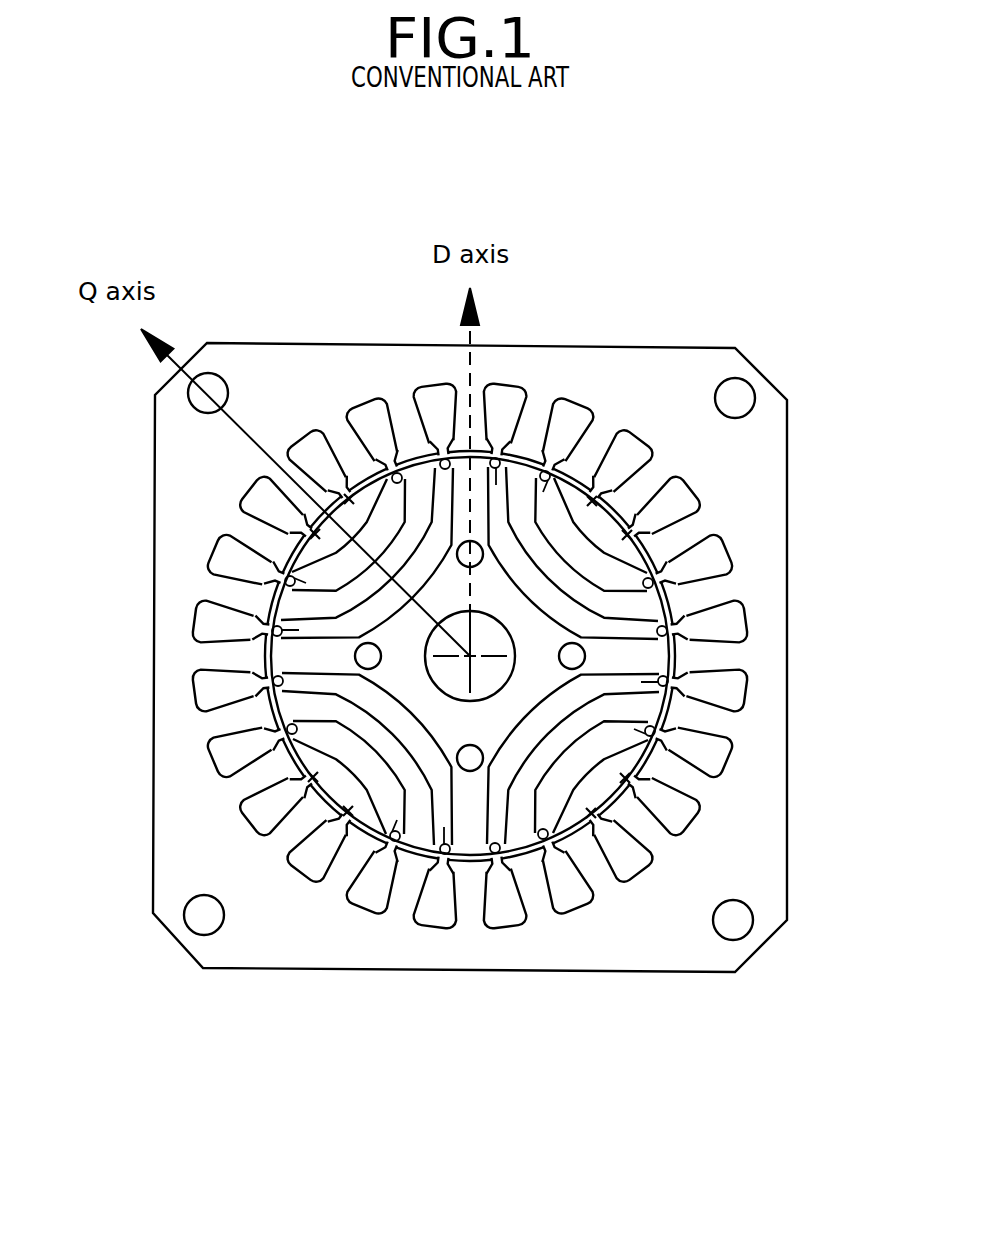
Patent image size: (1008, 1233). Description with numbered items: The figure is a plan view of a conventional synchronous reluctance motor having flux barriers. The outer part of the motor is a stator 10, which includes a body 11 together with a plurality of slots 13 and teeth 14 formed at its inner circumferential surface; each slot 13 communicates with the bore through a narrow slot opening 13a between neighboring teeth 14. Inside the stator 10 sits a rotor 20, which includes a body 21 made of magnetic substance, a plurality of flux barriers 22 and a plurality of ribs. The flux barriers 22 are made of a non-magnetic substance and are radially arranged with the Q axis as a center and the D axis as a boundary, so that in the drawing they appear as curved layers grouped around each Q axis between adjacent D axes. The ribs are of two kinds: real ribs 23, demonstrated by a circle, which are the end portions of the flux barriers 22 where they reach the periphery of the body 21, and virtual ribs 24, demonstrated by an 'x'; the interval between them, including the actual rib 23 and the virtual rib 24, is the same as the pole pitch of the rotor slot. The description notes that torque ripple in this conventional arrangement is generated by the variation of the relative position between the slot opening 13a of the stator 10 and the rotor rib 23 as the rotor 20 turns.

The stator 10 is at (528, 628).
The body 11 is at (615, 370).
The slots 13 is at (712, 751).
The slot opening 13a is at (663, 737).
The teeth 14 is at (690, 782).
The rotor 20 is at (498, 753).
The body 21 is at (469, 812).
The flux barriers 22 is at (277, 628).
The real ribs 23 is at (655, 582).
The virtual ribs 24 is at (632, 537).